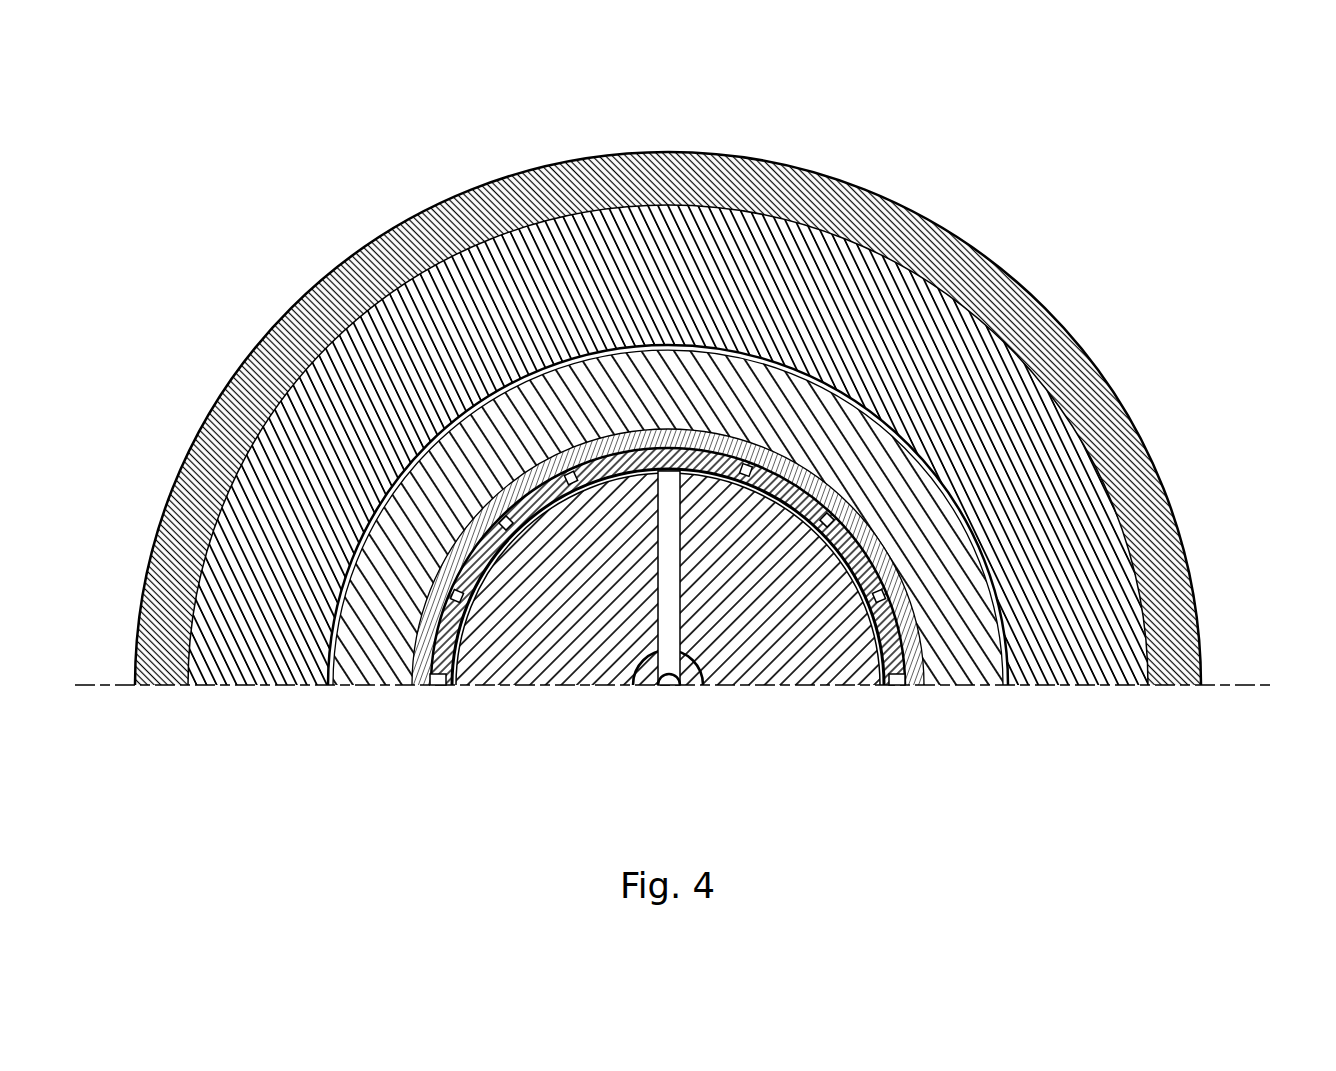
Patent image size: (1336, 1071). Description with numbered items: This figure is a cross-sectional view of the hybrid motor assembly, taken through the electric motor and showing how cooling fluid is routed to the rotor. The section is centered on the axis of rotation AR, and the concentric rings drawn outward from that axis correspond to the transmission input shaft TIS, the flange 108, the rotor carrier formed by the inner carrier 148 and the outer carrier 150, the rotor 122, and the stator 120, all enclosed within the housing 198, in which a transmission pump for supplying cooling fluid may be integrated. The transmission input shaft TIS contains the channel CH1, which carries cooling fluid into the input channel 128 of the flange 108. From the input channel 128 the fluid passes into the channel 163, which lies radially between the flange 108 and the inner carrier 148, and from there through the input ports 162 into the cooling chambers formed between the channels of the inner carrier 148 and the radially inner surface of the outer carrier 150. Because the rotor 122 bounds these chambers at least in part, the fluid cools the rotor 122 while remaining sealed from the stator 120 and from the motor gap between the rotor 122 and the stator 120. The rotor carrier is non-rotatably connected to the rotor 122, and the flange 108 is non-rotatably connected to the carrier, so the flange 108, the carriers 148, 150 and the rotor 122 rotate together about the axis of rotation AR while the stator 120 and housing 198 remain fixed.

The housing 198 is at (702, 172).
The stator 120 is at (573, 237).
The rotor 122 is at (460, 413).
The outer carrier 150 is at (433, 537).
The channel 163 is at (798, 463).
The input port 162 is at (822, 517).
The inner carrier 148 is at (910, 640).
The flange 108 is at (510, 630).
The input channel 128 is at (665, 600).
The transmission input shaft TIS is at (687, 655).
The channel CH1 is at (670, 688).
The axis of rotation AR is at (1229, 688).